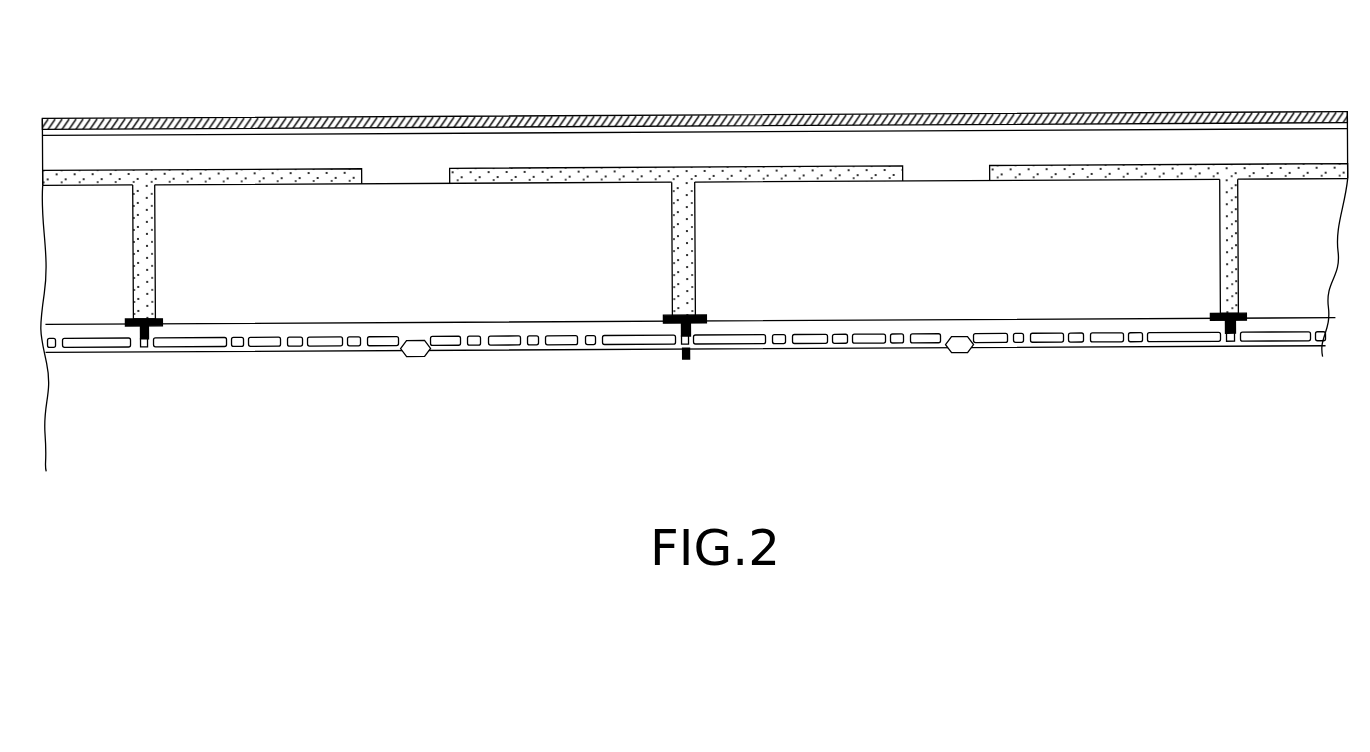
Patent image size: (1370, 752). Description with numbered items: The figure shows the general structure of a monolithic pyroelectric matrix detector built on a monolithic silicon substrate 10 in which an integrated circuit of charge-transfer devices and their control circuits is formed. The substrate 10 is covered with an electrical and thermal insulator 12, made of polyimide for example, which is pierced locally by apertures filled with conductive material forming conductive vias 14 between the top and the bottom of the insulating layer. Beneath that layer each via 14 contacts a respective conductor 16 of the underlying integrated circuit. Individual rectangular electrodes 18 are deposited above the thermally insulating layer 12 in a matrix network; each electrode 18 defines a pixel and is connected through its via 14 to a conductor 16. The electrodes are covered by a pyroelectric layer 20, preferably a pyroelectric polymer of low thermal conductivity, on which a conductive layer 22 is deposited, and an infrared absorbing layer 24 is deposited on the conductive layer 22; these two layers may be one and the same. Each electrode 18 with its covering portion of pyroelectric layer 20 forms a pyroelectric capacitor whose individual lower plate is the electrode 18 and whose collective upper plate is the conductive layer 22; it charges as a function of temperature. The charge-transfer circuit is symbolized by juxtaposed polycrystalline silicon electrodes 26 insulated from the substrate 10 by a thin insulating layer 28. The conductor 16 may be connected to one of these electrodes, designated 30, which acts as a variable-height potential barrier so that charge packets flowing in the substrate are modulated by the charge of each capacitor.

The monolithic silicon substrate 10 is at (694, 292).
The electrical and thermal insulator 12 is at (695, 182).
The conductive via 14 is at (686, 249).
The conductor 16 is at (685, 325).
The individual rectangular electrode 18 is at (695, 175).
The pyroelectric layer 20 is at (689, 152).
The conductive layer 22 is at (694, 132).
The infrared absorbing layer 24 is at (694, 121).
The juxtaposed electrodes 26 is at (687, 345).
The thin insulating layer 28 is at (690, 335).
The electrode 30 is at (686, 353).